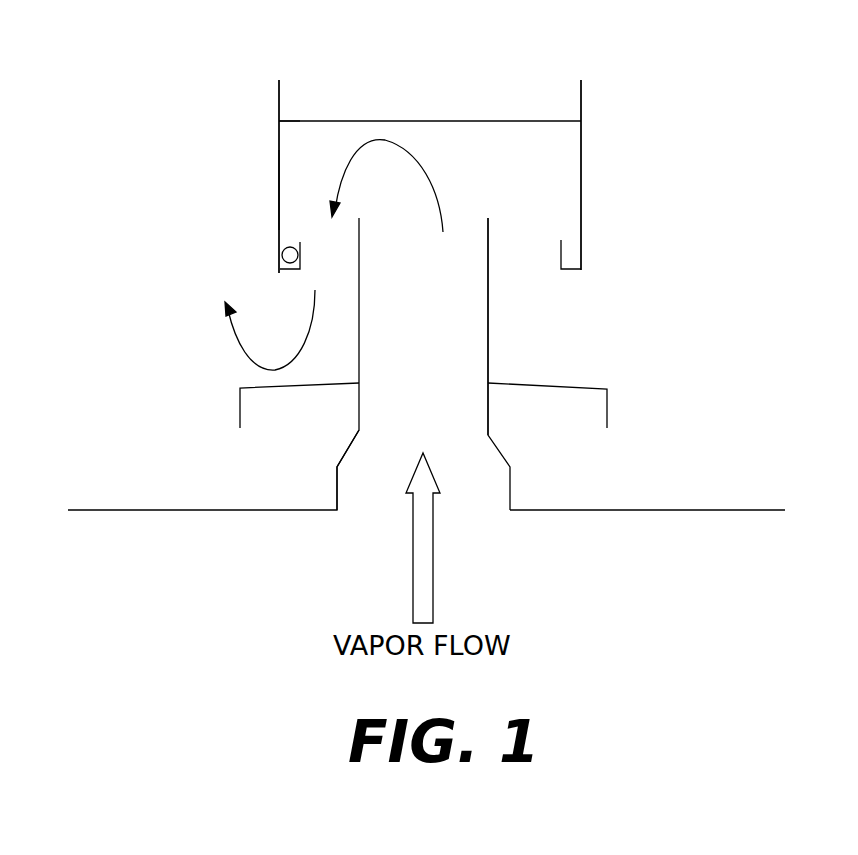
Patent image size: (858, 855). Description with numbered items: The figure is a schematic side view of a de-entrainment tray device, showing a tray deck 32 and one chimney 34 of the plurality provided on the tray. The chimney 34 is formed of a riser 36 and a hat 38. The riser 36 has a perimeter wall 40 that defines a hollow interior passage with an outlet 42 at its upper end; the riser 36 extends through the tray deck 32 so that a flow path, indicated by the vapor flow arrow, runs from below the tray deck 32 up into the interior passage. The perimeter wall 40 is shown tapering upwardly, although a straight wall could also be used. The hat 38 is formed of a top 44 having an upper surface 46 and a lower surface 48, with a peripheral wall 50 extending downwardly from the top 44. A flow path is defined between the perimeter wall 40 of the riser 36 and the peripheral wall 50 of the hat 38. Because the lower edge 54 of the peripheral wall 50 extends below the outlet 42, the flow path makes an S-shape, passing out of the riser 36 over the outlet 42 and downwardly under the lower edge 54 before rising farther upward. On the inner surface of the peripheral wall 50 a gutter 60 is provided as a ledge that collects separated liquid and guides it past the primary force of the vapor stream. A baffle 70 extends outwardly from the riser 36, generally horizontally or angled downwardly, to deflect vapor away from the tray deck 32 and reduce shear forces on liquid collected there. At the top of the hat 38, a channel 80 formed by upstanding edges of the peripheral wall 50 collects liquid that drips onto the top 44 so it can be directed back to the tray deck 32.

The tray deck 32 is at (733, 510).
The chimney 34 is at (730, 145).
The riser 36 is at (340, 462).
The hat 38 is at (279, 121).
The perimeter wall 40 is at (488, 338).
The outlet 42 is at (488, 222).
The top 44 is at (441, 106).
The upper surface 46 is at (500, 121).
The lower surface 48 is at (545, 121).
The peripheral wall 50 is at (279, 188).
The lower edge 54 is at (278, 268).
The gutter 60 is at (578, 270).
The baffle 70 is at (590, 388).
The channel 80 is at (283, 121).